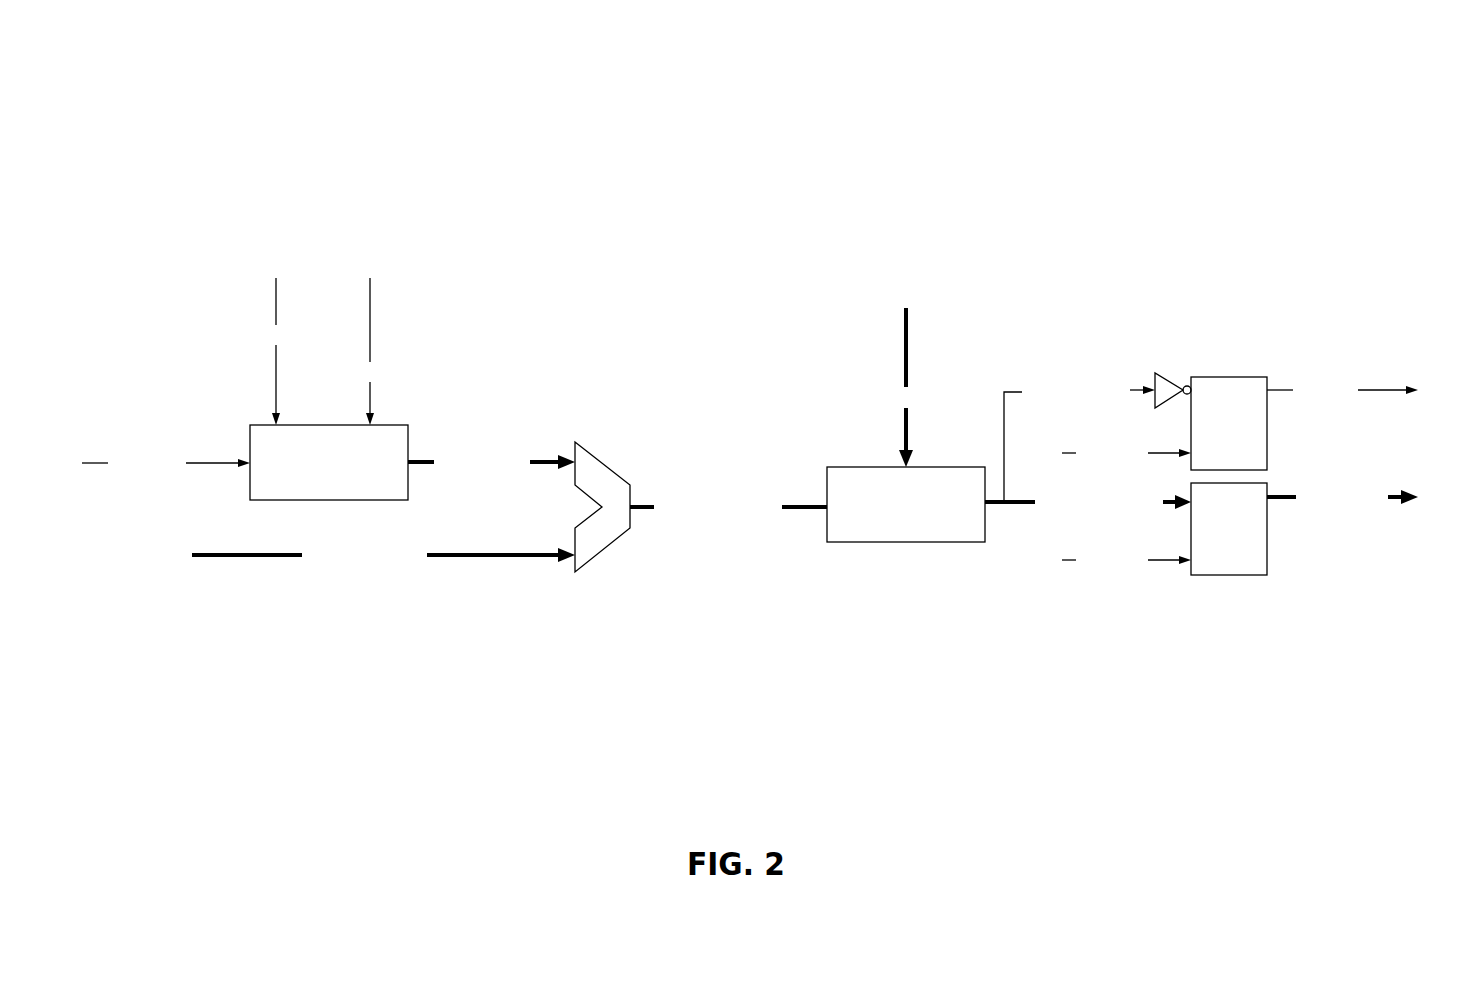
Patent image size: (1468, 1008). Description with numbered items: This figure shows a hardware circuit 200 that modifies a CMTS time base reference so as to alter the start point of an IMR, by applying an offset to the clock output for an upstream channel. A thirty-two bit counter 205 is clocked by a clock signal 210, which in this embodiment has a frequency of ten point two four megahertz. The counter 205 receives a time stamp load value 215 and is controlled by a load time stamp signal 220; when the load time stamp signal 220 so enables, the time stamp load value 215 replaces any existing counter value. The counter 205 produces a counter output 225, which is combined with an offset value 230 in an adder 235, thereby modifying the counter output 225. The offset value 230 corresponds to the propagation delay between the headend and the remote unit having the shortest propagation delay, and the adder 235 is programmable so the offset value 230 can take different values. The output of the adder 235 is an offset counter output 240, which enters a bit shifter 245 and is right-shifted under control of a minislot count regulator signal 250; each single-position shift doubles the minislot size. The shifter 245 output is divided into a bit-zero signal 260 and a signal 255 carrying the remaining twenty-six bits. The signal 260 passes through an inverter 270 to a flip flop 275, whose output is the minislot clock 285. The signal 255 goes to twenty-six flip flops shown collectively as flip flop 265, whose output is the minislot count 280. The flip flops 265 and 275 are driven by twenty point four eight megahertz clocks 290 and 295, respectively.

The timestamp generation circuit 200 is at (1410, 134).
The 32-bit counter 205 is at (250, 452).
The clock signal 210 is at (95, 463).
The time stamp load value 215 is at (275, 315).
The load time stamp signal 220 is at (371, 315).
The counter output 225 is at (553, 456).
The offset value 230 is at (512, 551).
The adder 235 is at (607, 467).
The offset counter output 240 is at (650, 510).
The bit shifter 245 is at (910, 542).
The minislot count regulator signal 250 is at (907, 323).
The signal (remaining 26 bits) 255 is at (1017, 504).
The signal (bit 0) 260 is at (1012, 392).
The flip flop 265 is at (1232, 575).
The inverter 270 is at (1166, 372).
The flip flop 275 is at (1238, 377).
The minislot count 280 is at (1388, 500).
The minislot clock 285 is at (1380, 390).
The 20.48 MHz clock 290 is at (1072, 560).
The 20.48 MHz clock 295 is at (1067, 452).